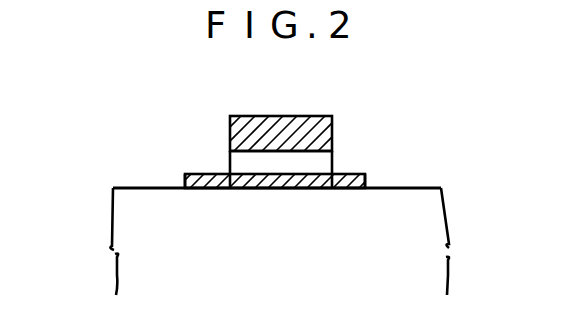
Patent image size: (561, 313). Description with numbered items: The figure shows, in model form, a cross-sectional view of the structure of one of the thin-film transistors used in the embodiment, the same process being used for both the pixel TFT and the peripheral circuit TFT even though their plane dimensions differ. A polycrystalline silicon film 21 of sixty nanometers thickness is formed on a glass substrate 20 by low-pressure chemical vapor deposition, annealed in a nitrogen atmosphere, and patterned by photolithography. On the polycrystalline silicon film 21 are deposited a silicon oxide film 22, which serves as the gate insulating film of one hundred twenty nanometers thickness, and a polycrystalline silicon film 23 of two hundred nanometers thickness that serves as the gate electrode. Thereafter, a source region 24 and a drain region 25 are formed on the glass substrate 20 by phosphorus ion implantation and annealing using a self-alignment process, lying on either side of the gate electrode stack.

The glass substrate 20 is at (127, 213).
The polycrystalline silicon film 21 is at (288, 190).
The silicon oxide film 22 is at (243, 158).
The polycrystalline silicon film 23 is at (230, 119).
The source region 24 is at (185, 180).
The drain region 25 is at (356, 177).